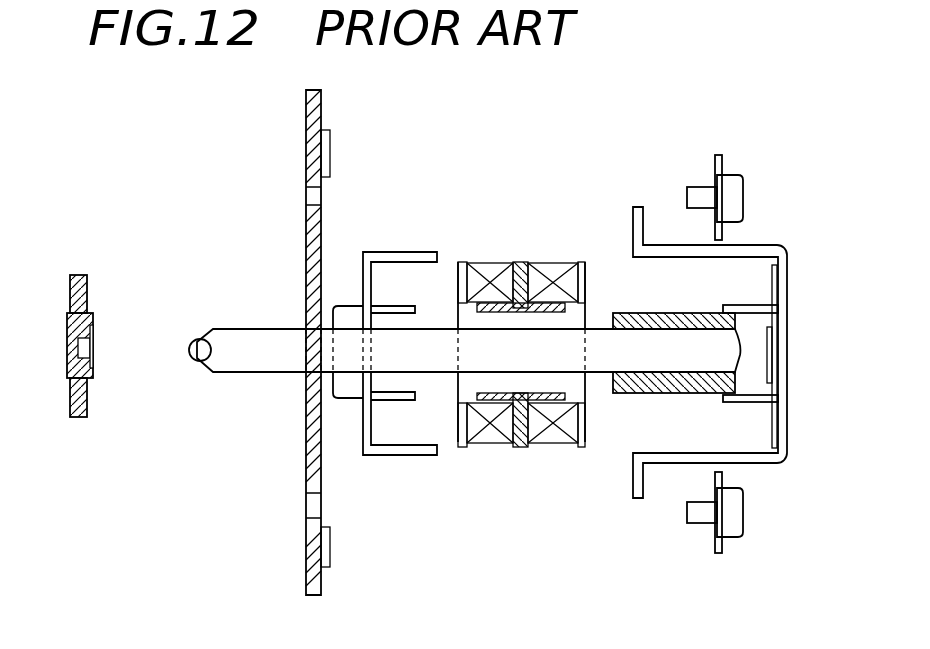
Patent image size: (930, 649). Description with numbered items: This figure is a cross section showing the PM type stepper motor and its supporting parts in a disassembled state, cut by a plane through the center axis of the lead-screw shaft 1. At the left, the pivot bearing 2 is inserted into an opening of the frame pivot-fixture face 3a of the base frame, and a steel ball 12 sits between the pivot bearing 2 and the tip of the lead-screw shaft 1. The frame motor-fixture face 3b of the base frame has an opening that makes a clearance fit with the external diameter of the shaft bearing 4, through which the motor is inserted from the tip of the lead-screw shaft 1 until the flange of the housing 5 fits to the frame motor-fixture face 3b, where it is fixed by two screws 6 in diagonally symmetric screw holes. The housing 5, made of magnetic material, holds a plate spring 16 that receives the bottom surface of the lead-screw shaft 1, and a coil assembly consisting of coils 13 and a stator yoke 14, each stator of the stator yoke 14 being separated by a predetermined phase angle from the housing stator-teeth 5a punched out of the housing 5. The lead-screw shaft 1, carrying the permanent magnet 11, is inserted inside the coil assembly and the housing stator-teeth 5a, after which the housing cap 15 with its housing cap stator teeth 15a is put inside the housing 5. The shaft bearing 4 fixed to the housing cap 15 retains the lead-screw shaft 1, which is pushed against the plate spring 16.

The lead-screw shaft 1 is at (297, 355).
The pivot bearing 2 is at (67, 332).
The frame pivot-fixture face 3a is at (83, 281).
The frame motor-fixture face 3b is at (306, 137).
The shaft bearing 4 is at (345, 305).
The housing 5 is at (772, 245).
The housing stator-teeth 5a is at (742, 305).
The screws 6 is at (727, 185).
The permanent magnet 11 is at (632, 318).
The steel ball 12 is at (196, 358).
The coils 13 is at (551, 425).
The stator yoke 14 is at (512, 447).
The housing cap 15 is at (385, 252).
The housing cap stator teeth 15a is at (385, 306).
The plate spring 16 is at (776, 338).